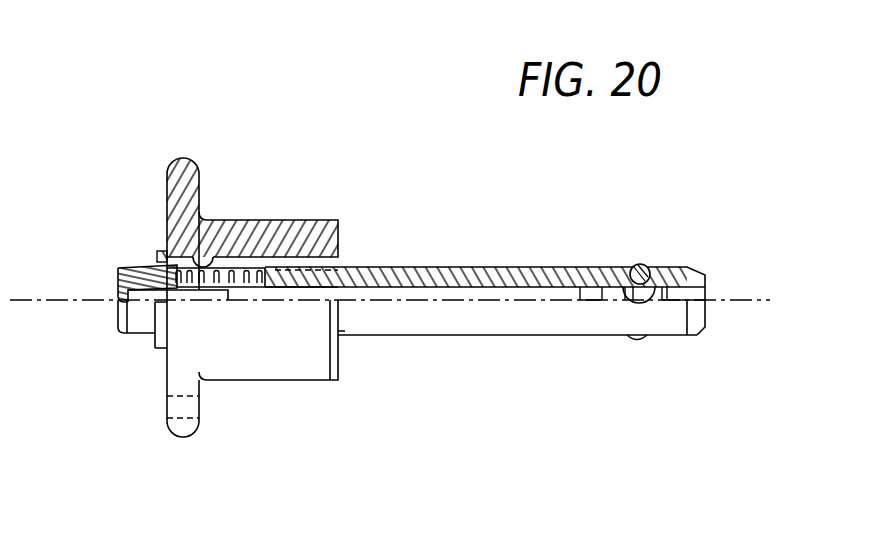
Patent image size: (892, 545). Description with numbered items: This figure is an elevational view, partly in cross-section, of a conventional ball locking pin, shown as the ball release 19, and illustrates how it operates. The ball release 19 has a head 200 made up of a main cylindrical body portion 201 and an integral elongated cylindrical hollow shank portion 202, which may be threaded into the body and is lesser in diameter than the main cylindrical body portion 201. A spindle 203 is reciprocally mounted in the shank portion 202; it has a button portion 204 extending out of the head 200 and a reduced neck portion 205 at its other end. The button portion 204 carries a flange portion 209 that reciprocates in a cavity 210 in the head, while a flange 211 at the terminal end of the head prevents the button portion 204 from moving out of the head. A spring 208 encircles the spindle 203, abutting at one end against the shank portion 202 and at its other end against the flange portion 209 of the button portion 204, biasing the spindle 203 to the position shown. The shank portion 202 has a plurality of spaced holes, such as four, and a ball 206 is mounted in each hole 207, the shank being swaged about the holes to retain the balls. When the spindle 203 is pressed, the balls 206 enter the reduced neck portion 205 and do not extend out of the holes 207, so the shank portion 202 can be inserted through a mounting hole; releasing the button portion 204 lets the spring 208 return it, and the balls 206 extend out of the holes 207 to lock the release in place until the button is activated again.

The ball release 19 is at (348, 454).
The head 200 is at (256, 168).
The main cylindrical body portion 201 is at (287, 370).
The elongated cylindrical hollow shank portion 202 is at (454, 268).
The spindle 203 is at (508, 292).
The button portion 204 is at (135, 325).
The reduced neck portion 205 is at (603, 286).
The ball 206 is at (648, 263).
The hole 207 is at (637, 262).
The spring 208 is at (248, 276).
The flange portion 209 is at (166, 248).
The cavity 210 is at (215, 262).
The flange 211 is at (158, 258).